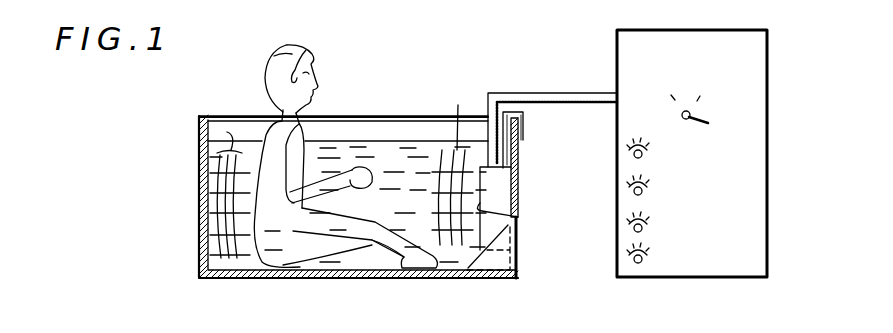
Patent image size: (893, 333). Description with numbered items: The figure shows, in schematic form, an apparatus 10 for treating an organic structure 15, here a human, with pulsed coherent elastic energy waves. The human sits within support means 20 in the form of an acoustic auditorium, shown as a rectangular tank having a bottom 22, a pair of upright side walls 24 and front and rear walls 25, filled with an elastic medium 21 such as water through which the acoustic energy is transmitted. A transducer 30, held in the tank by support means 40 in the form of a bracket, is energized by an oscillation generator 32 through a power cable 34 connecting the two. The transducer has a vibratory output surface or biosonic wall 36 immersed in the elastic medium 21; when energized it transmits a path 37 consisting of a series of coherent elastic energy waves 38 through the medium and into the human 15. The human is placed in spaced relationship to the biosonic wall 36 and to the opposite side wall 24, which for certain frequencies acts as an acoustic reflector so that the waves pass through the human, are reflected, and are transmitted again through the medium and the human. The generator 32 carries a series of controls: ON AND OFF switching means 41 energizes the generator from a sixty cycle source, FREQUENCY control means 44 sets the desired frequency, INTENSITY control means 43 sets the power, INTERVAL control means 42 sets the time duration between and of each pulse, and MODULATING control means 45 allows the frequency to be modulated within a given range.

The apparatus 10 is at (186, 173).
The organic structure 15 is at (258, 90).
The support means 20 is at (408, 116).
The elastic medium 21 is at (354, 142).
The bottom 22 is at (345, 279).
The side walls 24 is at (203, 242).
The front and rear walls 25 is at (218, 115).
The transducer 30 is at (507, 191).
The oscillation generator 32 is at (767, 277).
The power cable 34 is at (547, 96).
The biosonic wall 36 is at (518, 217).
The path 37 is at (227, 132).
The coherent elastic energy waves 38 is at (242, 262).
The support means 40 is at (523, 129).
The switching means 41 is at (704, 110).
The INTERVAL control means 42 is at (634, 154).
The INTENSITY control means 43 is at (634, 191).
The FREQUENCY control means 44 is at (634, 228).
The MODULATING control means 45 is at (634, 259).